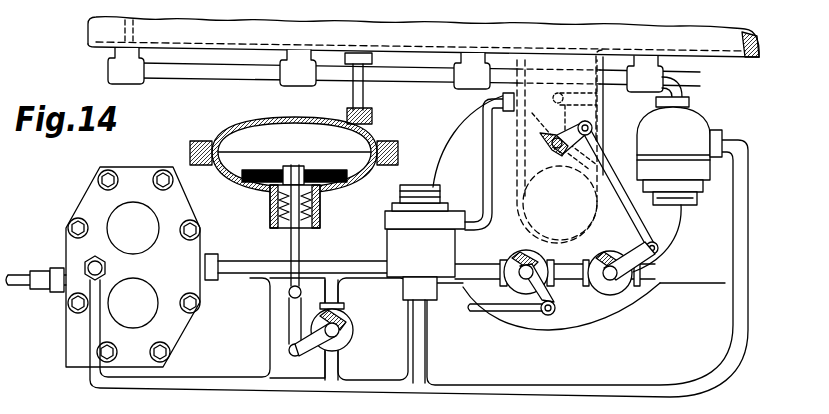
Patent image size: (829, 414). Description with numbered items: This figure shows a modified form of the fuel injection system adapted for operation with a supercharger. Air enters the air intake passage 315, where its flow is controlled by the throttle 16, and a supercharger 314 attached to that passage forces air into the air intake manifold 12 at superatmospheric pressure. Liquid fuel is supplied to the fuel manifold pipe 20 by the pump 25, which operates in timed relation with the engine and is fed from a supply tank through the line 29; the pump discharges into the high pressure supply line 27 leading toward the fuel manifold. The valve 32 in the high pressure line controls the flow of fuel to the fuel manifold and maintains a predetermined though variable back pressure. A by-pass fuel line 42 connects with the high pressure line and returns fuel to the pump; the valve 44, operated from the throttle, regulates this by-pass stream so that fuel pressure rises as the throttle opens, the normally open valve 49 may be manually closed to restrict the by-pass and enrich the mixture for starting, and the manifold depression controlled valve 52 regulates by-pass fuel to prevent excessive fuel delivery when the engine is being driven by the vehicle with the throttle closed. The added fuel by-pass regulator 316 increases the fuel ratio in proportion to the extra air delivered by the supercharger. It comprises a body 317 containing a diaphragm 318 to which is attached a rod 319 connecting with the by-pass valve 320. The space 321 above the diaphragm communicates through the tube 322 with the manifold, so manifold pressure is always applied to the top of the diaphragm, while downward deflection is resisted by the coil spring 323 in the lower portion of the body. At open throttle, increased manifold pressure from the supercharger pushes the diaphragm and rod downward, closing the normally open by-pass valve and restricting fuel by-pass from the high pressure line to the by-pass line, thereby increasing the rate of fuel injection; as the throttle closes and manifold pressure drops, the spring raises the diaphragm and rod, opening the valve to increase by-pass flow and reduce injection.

The air intake manifold 12 is at (719, 57).
The fuel manifold pipe 20 is at (223, 77).
The tube 322 is at (362, 90).
The body 317 is at (377, 138).
The space 321 is at (294, 146).
The diaphragm 318 is at (333, 187).
The fuel by-pass regulator 316 is at (264, 204).
The coil spring 323 is at (320, 217).
The rod 319 is at (300, 252).
The pump 25 is at (134, 165).
The line 29 is at (22, 286).
The by-pass fuel line 42 is at (247, 273).
The high pressure supply line 27 is at (247, 384).
The vacuum controlled valve 52 is at (385, 239).
The supercharger 314 is at (462, 138).
The throttle 16 is at (522, 131).
The air intake passage 315 is at (550, 207).
The normally open valve 49 is at (506, 255).
The valve 44 is at (645, 246).
The valve 32 is at (713, 117).
The by-pass valve 320 is at (355, 321).